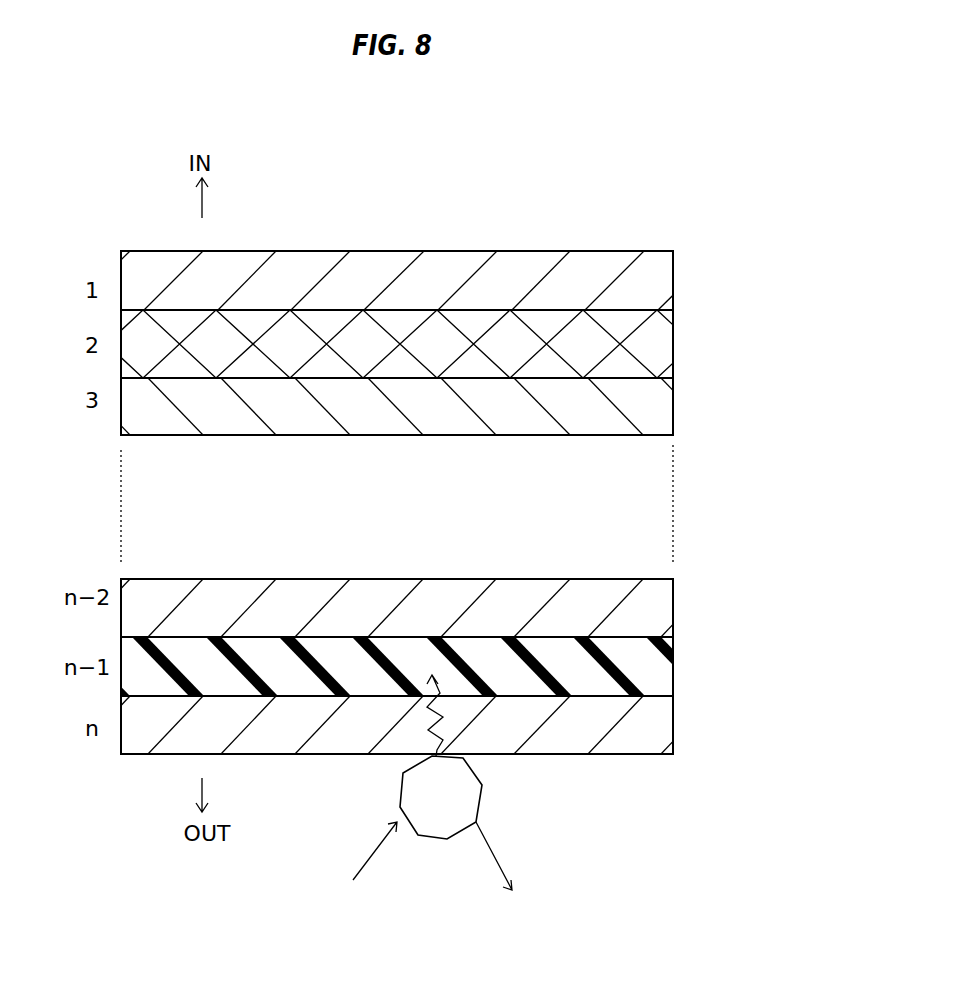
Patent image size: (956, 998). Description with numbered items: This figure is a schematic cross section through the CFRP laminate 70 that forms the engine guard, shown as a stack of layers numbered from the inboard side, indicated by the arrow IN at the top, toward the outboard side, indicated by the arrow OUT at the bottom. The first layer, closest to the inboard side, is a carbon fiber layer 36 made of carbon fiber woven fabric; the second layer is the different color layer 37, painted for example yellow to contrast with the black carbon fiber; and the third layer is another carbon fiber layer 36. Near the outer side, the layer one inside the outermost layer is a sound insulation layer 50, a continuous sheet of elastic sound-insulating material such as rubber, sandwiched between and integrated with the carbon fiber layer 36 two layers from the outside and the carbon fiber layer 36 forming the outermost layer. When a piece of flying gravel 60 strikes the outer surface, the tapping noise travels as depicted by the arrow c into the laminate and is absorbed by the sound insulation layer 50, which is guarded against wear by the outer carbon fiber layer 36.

The CFRP laminate 70 is at (332, 228).
The carbon fiber layer 36 is at (411, 251).
The different color layer 37 is at (494, 338).
The sound insulation layer 50 is at (393, 645).
The flying gravel 60 is at (413, 797).
The arrow c is at (428, 750).